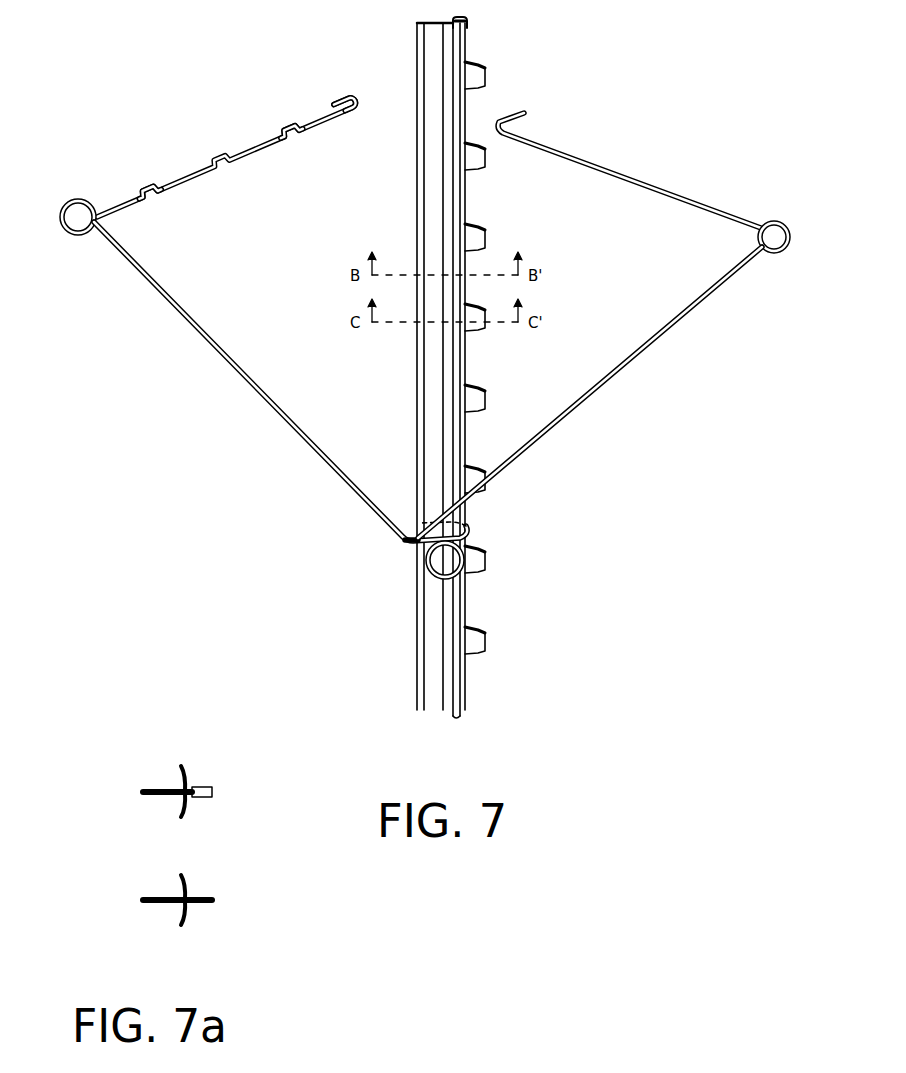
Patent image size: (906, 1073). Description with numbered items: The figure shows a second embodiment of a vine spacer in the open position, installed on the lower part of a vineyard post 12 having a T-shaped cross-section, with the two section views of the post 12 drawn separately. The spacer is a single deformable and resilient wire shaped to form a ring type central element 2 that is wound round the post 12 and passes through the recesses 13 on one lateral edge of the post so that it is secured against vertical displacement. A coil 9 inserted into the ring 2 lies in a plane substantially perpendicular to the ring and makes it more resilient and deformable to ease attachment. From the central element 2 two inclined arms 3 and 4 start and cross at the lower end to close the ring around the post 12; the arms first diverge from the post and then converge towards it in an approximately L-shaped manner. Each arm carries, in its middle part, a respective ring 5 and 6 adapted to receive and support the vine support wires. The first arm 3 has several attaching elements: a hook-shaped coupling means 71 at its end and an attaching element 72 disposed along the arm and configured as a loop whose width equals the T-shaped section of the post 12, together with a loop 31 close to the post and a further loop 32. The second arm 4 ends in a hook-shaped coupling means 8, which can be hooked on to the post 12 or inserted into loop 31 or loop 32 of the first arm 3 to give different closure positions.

In FIG. 7, the ring type central element 2 is at (435, 520).
In FIG. 7, the first arm 3 is at (243, 377).
In FIG. 7, the second arm 4 is at (590, 383).
In FIG. 7, the ring 5 is at (72, 200).
In FIG. 7, the ring 6 is at (773, 222).
In FIG. 7, the hook-shaped coupling means 8 is at (528, 115).
In FIG. 7, the coil 9 is at (466, 560).
In FIG. 7, the vineyard post 12 is at (455, 67).
In FIG. 7a, the vineyard post 12 is at (160, 790).
In FIG. 7, the recesses 13 is at (464, 522).
In FIG. 7, the loop 31 is at (296, 139).
In FIG. 7, the loop 32 is at (150, 201).
In FIG. 7, the hook-shaped coupling means 71 is at (342, 107).
In FIG. 7, the attaching element 72 is at (252, 153).